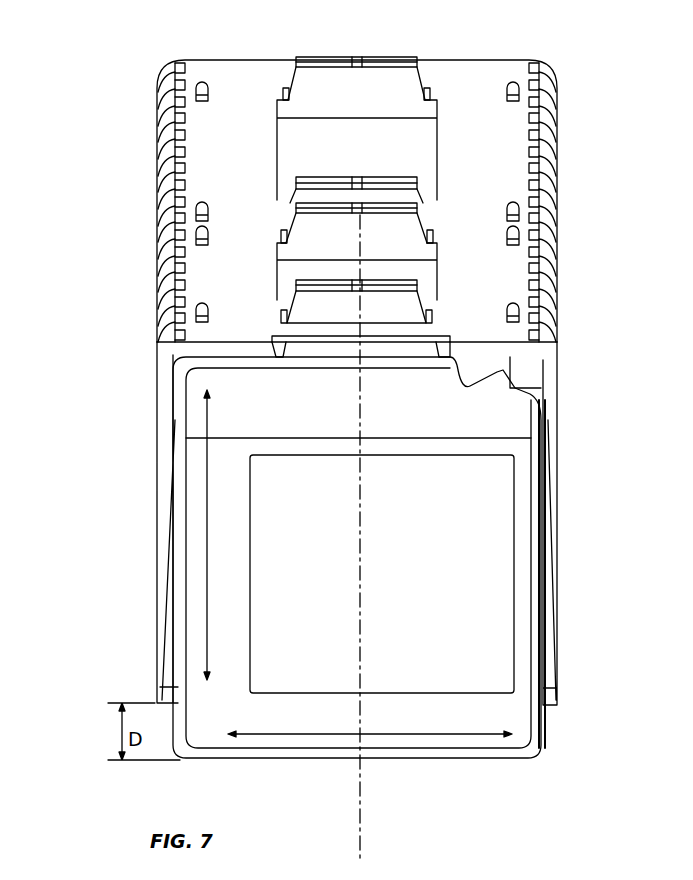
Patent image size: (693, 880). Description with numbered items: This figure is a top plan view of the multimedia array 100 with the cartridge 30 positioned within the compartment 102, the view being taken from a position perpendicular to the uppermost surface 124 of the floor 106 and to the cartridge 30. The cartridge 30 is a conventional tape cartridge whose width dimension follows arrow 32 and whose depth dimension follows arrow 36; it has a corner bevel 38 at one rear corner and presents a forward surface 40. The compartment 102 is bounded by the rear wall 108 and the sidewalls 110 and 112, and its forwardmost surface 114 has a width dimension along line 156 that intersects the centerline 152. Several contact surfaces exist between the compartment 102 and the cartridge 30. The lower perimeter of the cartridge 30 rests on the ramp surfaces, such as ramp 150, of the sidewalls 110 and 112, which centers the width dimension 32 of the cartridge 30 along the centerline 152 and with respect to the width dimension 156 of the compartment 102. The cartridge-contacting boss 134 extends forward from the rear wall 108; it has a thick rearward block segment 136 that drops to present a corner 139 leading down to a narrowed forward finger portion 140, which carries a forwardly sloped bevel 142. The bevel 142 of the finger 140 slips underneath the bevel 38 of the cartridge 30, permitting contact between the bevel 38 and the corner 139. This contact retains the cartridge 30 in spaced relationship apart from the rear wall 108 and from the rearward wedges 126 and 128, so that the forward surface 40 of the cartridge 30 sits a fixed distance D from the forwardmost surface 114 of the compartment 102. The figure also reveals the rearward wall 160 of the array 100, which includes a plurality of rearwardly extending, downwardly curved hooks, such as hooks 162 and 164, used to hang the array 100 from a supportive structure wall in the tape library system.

The cartridge 30 is at (362, 428).
The width dimension arrow 32 is at (380, 733).
The depth dimension arrow 36 is at (208, 508).
The corner bevel 38 is at (497, 380).
The forward surface 40 is at (440, 758).
The multimedia array 100 is at (512, 168).
The compartment 102 is at (177, 440).
The floor 106 is at (242, 365).
The rear wall 108 is at (362, 357).
The sidewall 110 is at (560, 463).
The sidewall 112 is at (157, 505).
The forwardmost surface 114 is at (160, 700).
The uppermost surface 124 is at (462, 378).
The rearward wedge 126 is at (273, 357).
The rearward wedge 128 is at (490, 360).
The cartridge-contacting boss 134 is at (548, 352).
The rearward block segment 136 is at (528, 358).
The corner 139 is at (525, 375).
The forward finger portion 140 is at (535, 393).
The forwardly sloped bevel 142 is at (545, 405).
The ramp 150 is at (542, 535).
The centerline 152 is at (362, 815).
The width dimension line 156 is at (546, 706).
The rearward wall 160 is at (318, 169).
The hook 162 is at (305, 57).
The hook 164 is at (300, 228).